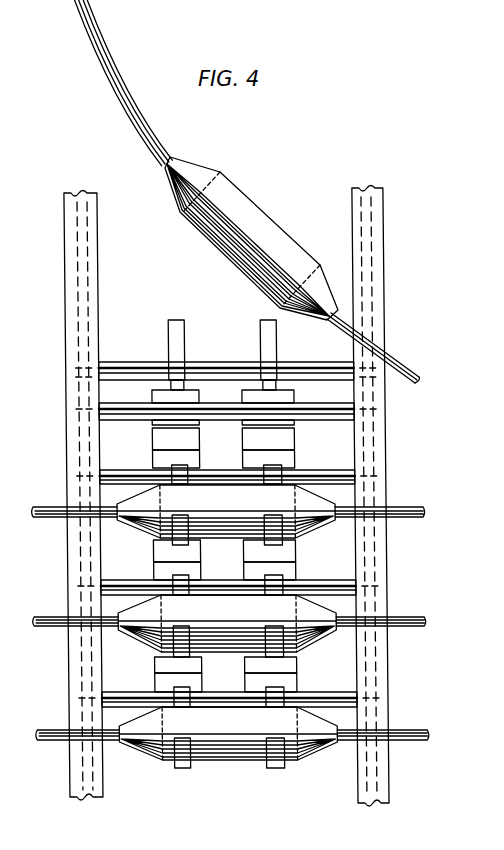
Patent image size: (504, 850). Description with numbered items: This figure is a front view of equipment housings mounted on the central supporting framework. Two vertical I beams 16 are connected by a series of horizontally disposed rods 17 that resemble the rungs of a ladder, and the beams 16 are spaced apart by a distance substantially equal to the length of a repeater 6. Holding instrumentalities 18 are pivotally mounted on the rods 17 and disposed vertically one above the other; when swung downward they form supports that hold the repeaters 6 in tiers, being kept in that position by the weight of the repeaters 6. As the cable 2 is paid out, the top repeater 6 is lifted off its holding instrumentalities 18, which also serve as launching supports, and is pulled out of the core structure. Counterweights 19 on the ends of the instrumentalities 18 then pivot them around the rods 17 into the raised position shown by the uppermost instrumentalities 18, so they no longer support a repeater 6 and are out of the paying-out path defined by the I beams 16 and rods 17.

The cable 2 is at (97, 49).
The repeater 6 is at (258, 221).
The vertical I beam 16 is at (78, 194).
The horizontally disposed rod 17 is at (338, 468).
The holding instrumentality 18 is at (266, 333).
The counterweight 19 is at (243, 428).